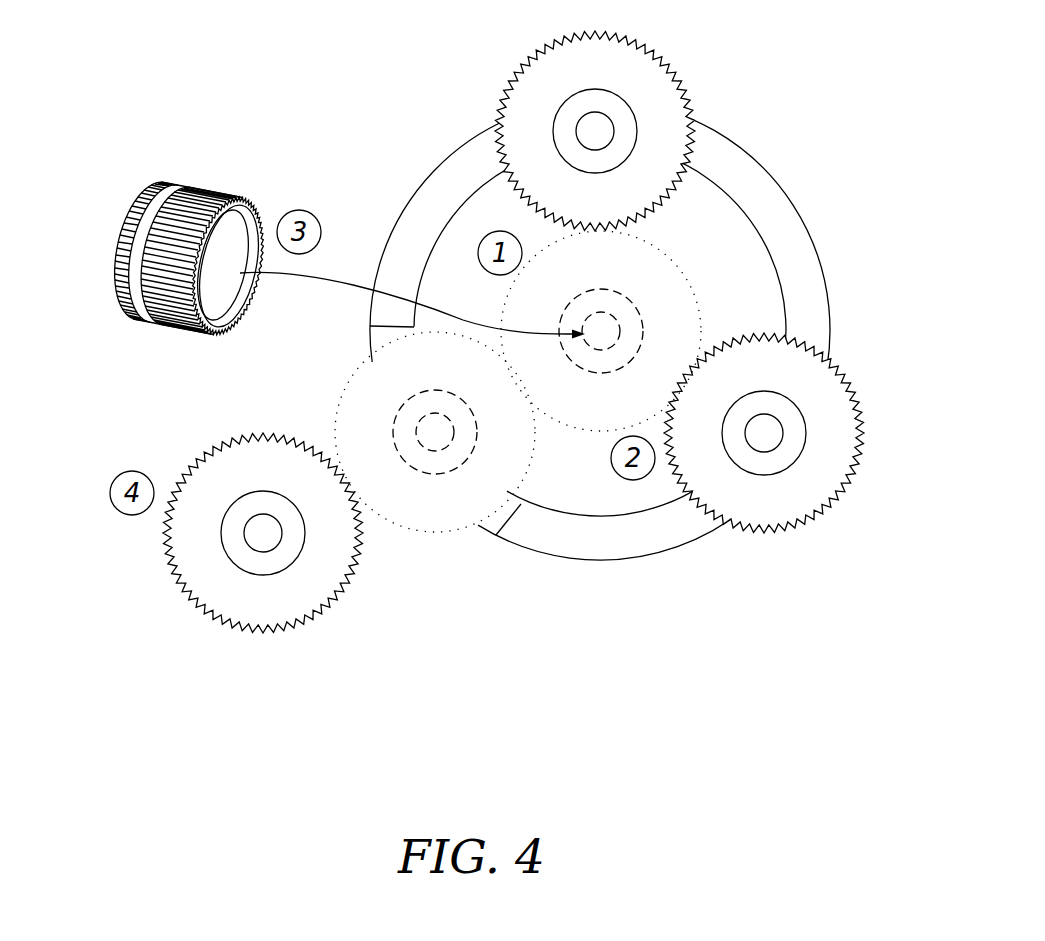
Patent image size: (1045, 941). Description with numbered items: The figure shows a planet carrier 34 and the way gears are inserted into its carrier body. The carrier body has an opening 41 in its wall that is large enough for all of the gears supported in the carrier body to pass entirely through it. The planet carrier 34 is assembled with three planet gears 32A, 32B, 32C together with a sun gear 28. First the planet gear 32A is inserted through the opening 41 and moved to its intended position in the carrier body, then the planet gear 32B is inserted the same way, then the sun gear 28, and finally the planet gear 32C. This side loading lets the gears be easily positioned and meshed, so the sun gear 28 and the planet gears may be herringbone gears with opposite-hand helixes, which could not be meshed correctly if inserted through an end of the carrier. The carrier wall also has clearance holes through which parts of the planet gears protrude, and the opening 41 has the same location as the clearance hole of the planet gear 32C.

The sun gear 28 is at (107, 206).
The planet gear 32A is at (661, 102).
The planet gear 32B is at (848, 419).
The planet gear 32C is at (450, 511).
The planet carrier 34 is at (805, 144).
The opening 41 is at (348, 344).